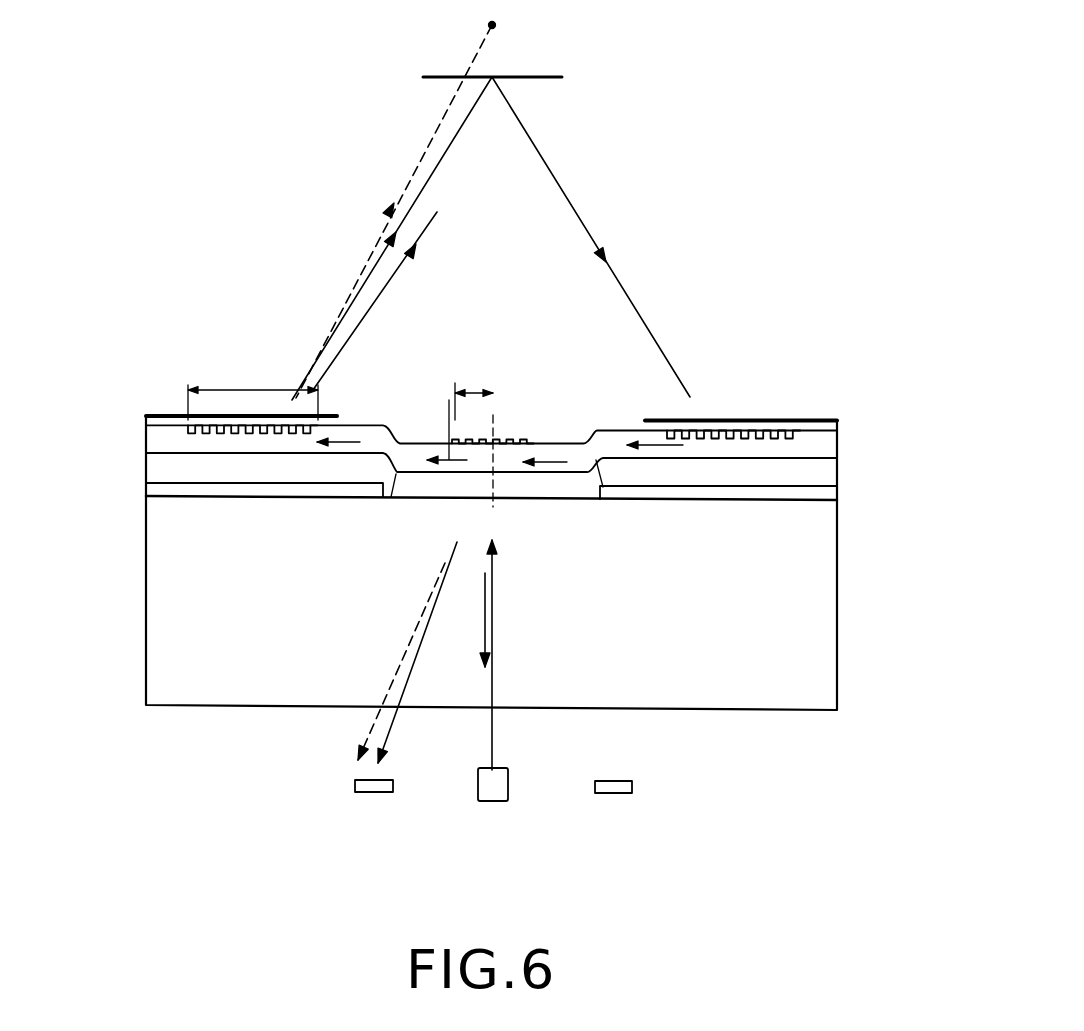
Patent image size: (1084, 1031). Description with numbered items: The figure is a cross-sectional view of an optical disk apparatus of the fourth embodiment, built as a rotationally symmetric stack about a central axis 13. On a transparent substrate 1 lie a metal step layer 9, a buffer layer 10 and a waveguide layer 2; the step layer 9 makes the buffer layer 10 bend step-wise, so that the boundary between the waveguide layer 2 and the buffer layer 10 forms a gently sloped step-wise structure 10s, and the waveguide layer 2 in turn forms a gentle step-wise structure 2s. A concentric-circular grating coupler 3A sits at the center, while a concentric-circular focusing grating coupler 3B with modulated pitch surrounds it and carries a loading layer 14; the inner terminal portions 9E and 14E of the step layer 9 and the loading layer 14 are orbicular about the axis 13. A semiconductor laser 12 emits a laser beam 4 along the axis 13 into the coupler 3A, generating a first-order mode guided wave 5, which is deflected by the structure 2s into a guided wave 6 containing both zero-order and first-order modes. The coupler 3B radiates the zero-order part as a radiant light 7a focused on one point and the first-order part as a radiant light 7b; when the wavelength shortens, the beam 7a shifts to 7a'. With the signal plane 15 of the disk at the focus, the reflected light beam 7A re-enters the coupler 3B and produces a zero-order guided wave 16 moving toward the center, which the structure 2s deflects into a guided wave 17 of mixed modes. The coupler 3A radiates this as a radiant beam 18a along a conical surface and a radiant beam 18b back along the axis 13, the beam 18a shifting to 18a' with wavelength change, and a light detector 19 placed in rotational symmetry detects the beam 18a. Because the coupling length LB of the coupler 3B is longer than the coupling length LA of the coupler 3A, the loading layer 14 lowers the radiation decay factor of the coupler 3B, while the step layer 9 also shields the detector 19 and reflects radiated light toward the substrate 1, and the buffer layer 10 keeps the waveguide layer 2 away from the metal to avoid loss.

The transparent substrate 1 is at (823, 613).
The waveguide layer 2 is at (840, 447).
The step-wise structure of the waveguide layer 2s is at (398, 450).
The concentric-circular grating coupler 3A is at (512, 440).
The concentric-circular focusing grating coupler 3B is at (225, 420).
The laser beam 4 is at (493, 612).
The guided wave 5 is at (443, 412).
The guided wave 6 is at (342, 418).
The radiant light 7a is at (385, 238).
The radiant light 7a' is at (396, 210).
The radiant light 7b is at (400, 270).
The reflected light beam 7A is at (637, 273).
The step layer 9 is at (146, 487).
The terminal portion of the step layer 9E is at (365, 440).
The buffer layer 10 is at (840, 482).
The step-wise structure of the boundary between waveguide layer and buffer layer 10s is at (385, 470).
The semiconductor laser 12 is at (478, 800).
The central axis 13 is at (493, 415).
The loading layer 14 is at (146, 417).
The terminal portion of the loading layer 14E is at (343, 410).
The signal plane 15 is at (538, 77).
The guided wave 16 is at (640, 445).
The guided wave 17 is at (548, 458).
The radiant beam 18a is at (421, 671).
The reflected light beam (shifted) 18a' is at (301, 668).
The radiant beam 18b is at (483, 618).
The light detector 19 is at (356, 790).
The coupling length of the grating coupler 3A LA is at (471, 382).
The coupling length of the grating coupler 3B LB is at (253, 388).